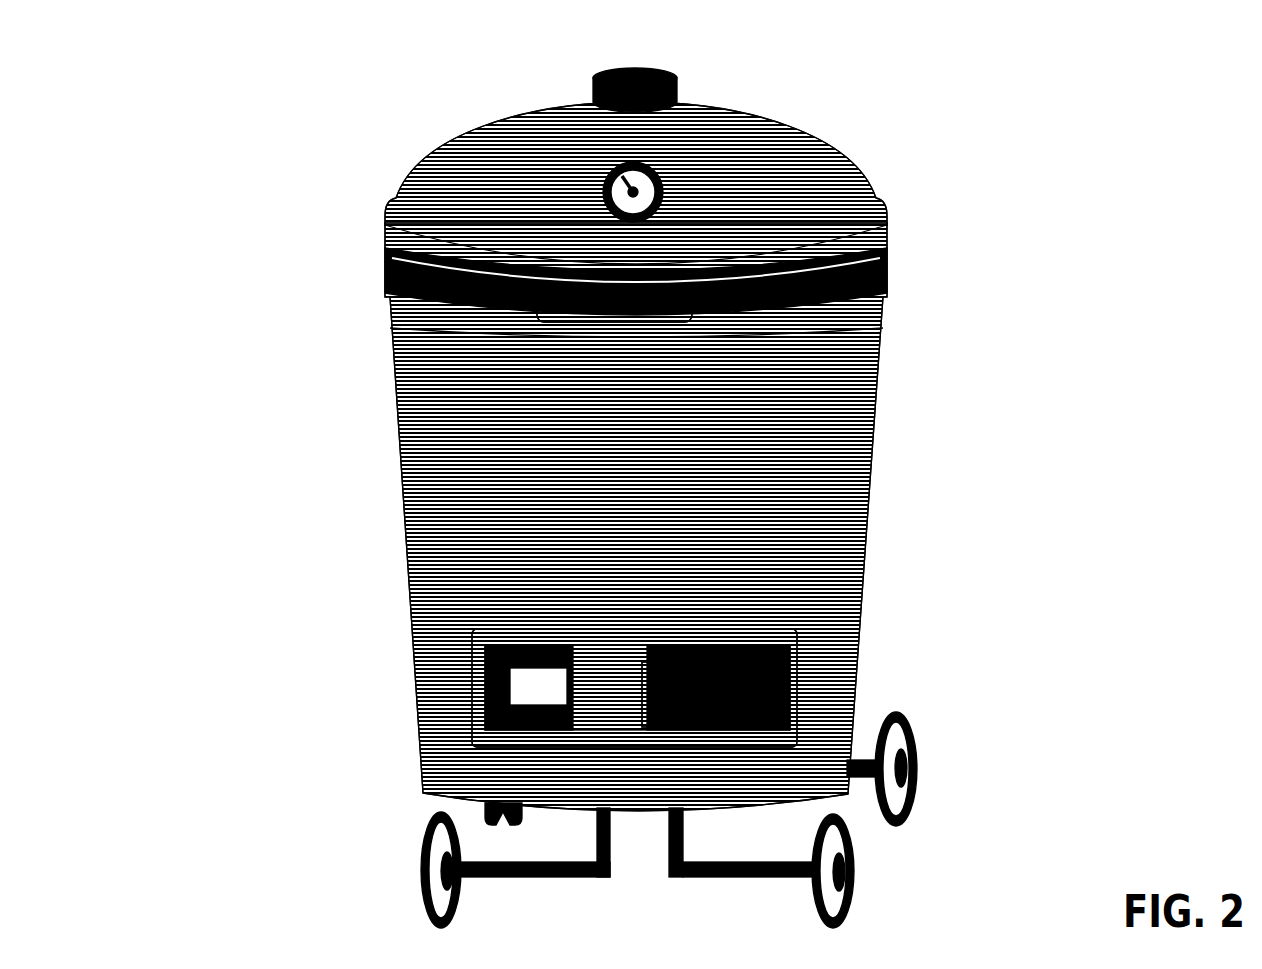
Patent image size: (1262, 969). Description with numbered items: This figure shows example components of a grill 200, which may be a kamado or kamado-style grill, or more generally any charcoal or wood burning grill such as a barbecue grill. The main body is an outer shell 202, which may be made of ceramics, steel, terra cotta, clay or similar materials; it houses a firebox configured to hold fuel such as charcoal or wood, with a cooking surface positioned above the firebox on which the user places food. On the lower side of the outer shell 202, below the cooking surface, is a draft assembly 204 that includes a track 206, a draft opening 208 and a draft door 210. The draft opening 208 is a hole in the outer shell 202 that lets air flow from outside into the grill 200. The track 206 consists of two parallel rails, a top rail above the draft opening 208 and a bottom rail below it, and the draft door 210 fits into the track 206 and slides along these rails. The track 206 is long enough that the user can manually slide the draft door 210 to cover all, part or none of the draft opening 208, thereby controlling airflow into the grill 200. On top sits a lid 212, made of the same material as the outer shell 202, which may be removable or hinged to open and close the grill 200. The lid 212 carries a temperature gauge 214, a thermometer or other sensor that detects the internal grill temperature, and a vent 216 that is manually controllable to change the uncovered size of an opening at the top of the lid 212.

The grill 200 is at (148, 36).
The outer shell 202 is at (867, 528).
The draft assembly 204 is at (613, 690).
The track 206 is at (531, 645).
The draft opening 208 is at (497, 684).
The draft door 210 is at (614, 735).
The lid 212 is at (870, 188).
The temperature gauge 214 is at (663, 192).
The vent 216 is at (636, 68).